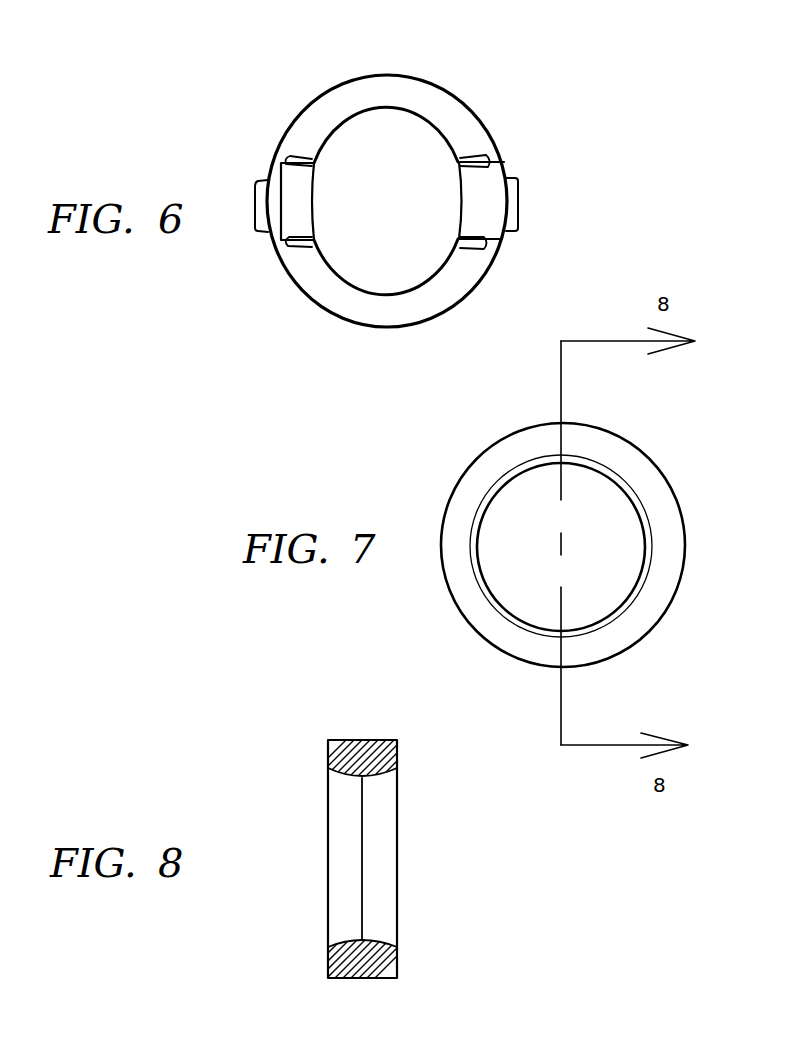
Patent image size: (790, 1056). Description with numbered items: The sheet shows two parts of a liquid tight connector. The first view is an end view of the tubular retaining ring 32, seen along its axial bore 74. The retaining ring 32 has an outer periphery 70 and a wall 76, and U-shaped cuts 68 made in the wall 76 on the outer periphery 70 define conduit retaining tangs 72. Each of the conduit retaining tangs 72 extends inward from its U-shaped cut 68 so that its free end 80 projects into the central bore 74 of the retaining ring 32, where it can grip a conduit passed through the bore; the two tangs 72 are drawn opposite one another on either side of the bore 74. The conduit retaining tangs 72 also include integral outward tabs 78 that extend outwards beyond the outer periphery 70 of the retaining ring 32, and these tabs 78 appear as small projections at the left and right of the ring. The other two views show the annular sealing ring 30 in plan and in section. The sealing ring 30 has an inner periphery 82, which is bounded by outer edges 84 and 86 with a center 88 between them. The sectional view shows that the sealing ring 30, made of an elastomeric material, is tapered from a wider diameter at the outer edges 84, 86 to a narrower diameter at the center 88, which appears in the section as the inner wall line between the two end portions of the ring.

In FIG. 7, the sealing ring 30 is at (428, 473).
In FIG. 8, the sealing ring 30 is at (397, 880).
In FIG. 6, the retaining ring 32 is at (255, 81).
In FIG. 6, the U-shaped cuts 68 is at (481, 160).
In FIG. 6, the outer periphery 70 is at (446, 81).
In FIG. 6, the conduit retaining tangs 72 is at (303, 214).
In FIG. 6, the axial bore 74 is at (396, 201).
In FIG. 6, the wall 76 is at (408, 107).
In FIG. 6, the outward tabs 78 is at (257, 217).
In FIG. 6, the free ends 80 is at (314, 190).
In FIG. 7, the inner periphery 82 is at (631, 510).
In FIG. 8, the outer edge 84 is at (328, 756).
In FIG. 7, the outer edge 86 is at (519, 474).
In FIG. 8, the outer edge 86 is at (397, 757).
In FIG. 6, the center 88 is at (458, 206).
In FIG. 8, the center 88 is at (362, 838).